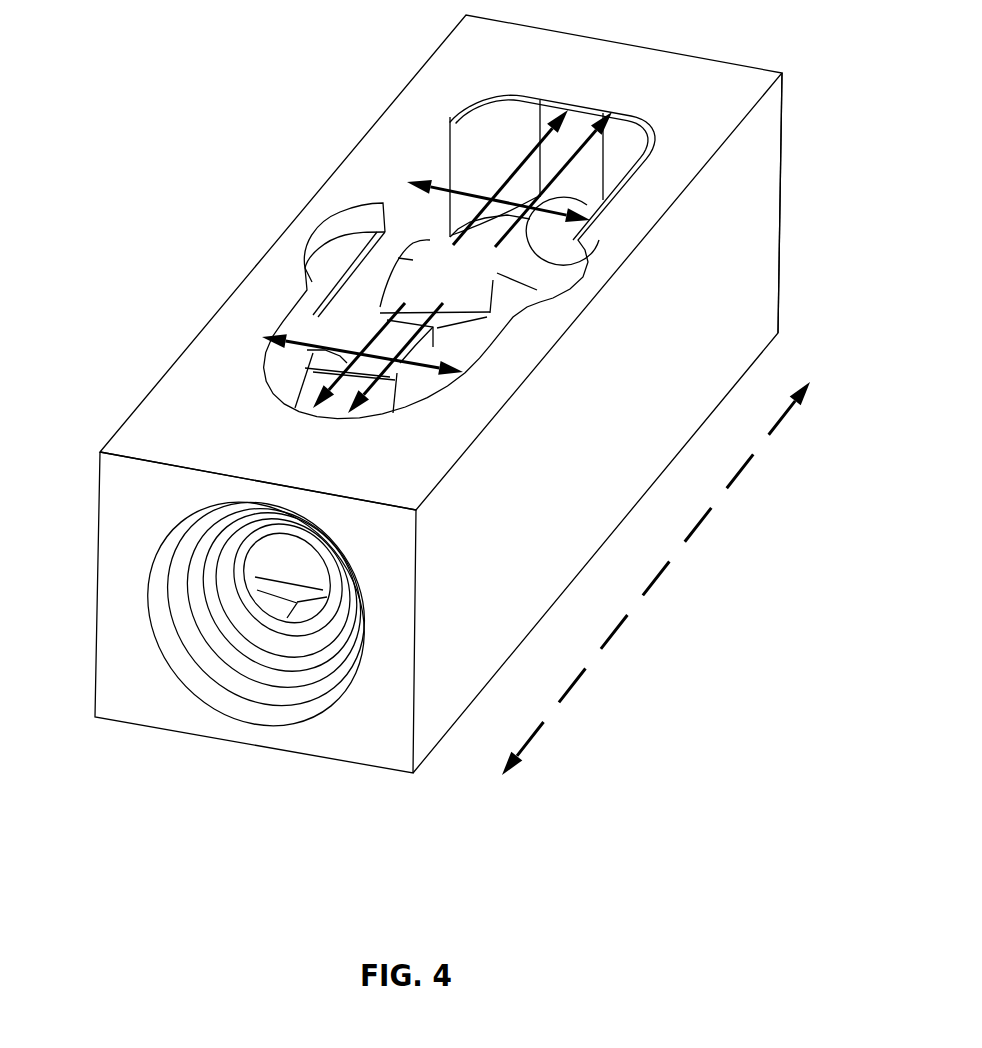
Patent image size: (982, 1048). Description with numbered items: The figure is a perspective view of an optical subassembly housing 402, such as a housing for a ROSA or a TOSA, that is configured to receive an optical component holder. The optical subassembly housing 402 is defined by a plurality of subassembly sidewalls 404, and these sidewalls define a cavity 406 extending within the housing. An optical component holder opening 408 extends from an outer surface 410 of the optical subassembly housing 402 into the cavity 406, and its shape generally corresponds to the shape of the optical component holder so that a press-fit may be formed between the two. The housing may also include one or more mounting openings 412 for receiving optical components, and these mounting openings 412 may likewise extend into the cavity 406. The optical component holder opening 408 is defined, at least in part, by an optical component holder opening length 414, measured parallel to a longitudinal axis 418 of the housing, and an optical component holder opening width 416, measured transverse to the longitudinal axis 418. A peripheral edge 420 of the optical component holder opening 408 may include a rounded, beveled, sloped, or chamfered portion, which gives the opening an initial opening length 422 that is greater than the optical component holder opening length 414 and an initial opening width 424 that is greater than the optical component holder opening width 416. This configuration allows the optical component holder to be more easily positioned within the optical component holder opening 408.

The optical subassembly housing 402 is at (264, 118).
The subassembly sidewalls 404 is at (748, 137).
The cavity 406 is at (264, 604).
The optical component holder opening 408 is at (299, 309).
The outer surface 410 is at (258, 474).
The mounting openings 412 is at (302, 739).
The optical component holder opening length 414 is at (392, 326).
The optical component holder opening width 416 is at (466, 193).
The longitudinal axis 418 is at (650, 590).
The peripheral edge 420 is at (526, 72).
The initial opening length 422 is at (473, 305).
The initial opening width 424 is at (317, 348).